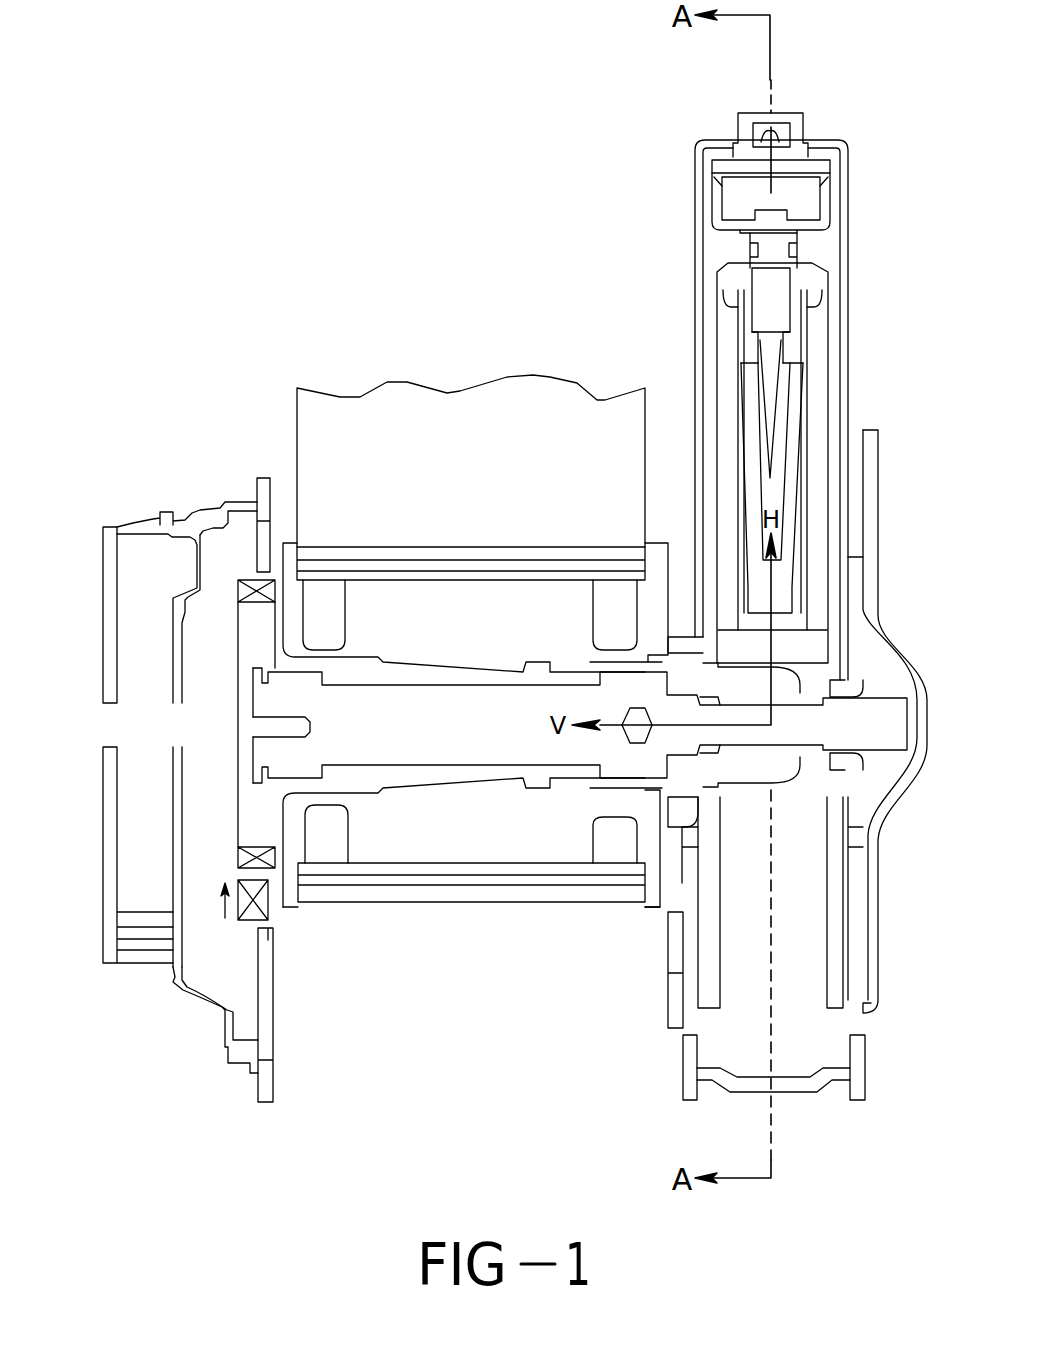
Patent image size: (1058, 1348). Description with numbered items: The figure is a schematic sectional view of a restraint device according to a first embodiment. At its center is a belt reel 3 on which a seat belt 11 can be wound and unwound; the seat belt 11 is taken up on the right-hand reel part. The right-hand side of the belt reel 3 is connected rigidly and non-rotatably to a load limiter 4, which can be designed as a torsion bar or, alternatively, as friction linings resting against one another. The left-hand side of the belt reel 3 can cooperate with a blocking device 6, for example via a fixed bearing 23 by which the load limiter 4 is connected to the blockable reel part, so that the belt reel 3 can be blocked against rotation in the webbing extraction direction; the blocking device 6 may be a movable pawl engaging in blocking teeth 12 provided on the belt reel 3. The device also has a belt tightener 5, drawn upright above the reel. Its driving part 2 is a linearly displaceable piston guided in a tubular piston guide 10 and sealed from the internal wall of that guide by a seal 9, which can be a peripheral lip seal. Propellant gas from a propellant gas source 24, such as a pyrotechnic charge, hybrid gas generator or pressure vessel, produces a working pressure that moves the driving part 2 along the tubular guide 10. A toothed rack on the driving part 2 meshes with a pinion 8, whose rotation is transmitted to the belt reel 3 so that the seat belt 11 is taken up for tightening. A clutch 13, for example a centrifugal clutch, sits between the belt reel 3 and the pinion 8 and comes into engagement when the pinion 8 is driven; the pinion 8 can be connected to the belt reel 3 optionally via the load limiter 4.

The driving part 2 is at (815, 436).
The belt reel 3 is at (484, 925).
The load limiter 4 is at (403, 748).
The belt tightener 5 is at (858, 216).
The blocking device 6 is at (247, 917).
The pinion 8 is at (762, 777).
The seal 9 is at (720, 287).
The tubular piston guide 10 is at (837, 315).
The seat belt 11 is at (453, 410).
The blocking teeth 12 is at (238, 857).
The clutch 13 is at (692, 778).
The fixed bearing 23 is at (278, 722).
The propellant gas source 24 is at (735, 197).